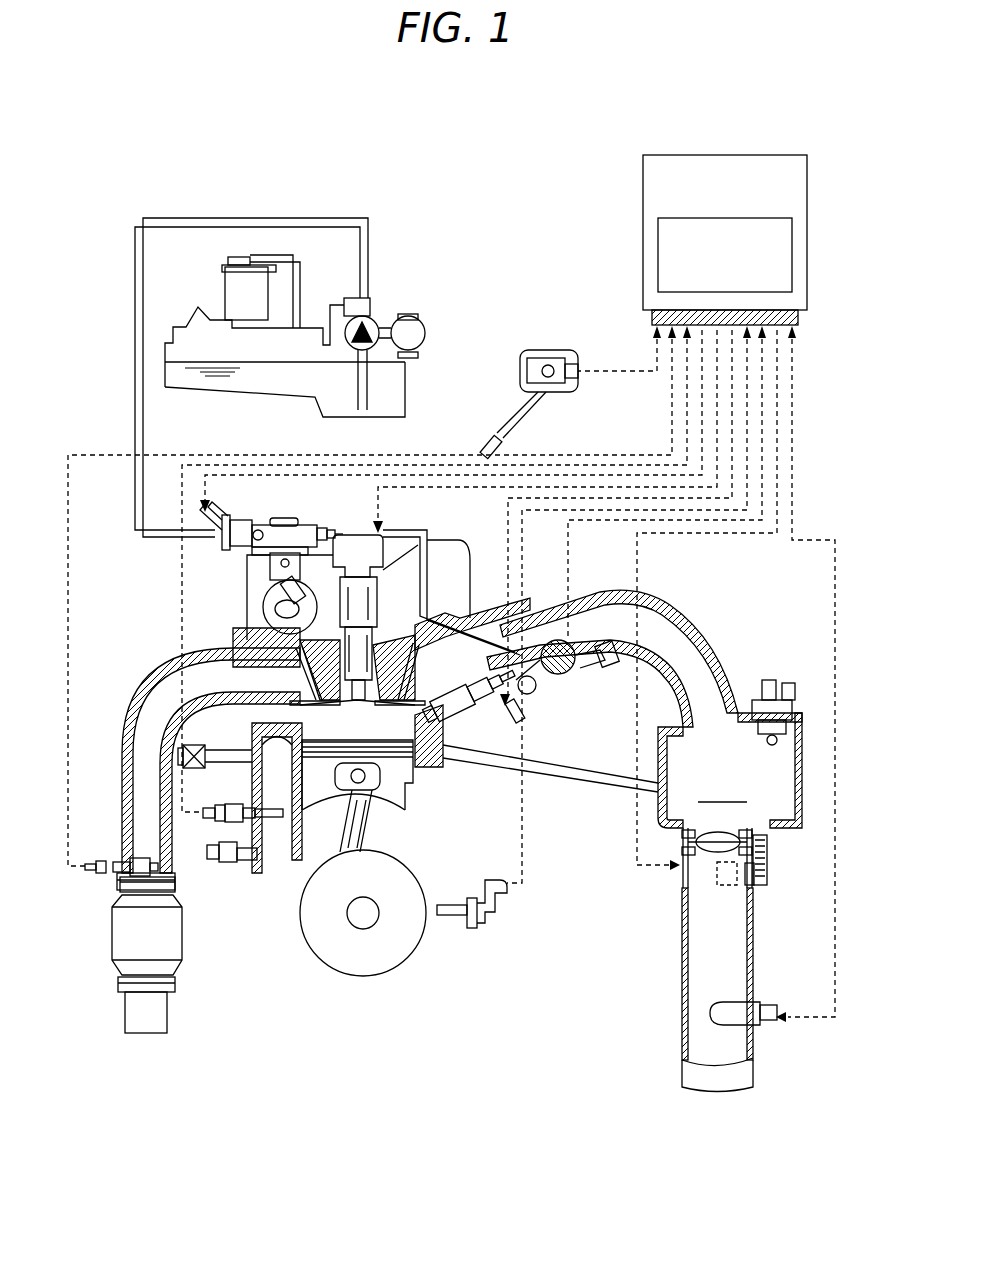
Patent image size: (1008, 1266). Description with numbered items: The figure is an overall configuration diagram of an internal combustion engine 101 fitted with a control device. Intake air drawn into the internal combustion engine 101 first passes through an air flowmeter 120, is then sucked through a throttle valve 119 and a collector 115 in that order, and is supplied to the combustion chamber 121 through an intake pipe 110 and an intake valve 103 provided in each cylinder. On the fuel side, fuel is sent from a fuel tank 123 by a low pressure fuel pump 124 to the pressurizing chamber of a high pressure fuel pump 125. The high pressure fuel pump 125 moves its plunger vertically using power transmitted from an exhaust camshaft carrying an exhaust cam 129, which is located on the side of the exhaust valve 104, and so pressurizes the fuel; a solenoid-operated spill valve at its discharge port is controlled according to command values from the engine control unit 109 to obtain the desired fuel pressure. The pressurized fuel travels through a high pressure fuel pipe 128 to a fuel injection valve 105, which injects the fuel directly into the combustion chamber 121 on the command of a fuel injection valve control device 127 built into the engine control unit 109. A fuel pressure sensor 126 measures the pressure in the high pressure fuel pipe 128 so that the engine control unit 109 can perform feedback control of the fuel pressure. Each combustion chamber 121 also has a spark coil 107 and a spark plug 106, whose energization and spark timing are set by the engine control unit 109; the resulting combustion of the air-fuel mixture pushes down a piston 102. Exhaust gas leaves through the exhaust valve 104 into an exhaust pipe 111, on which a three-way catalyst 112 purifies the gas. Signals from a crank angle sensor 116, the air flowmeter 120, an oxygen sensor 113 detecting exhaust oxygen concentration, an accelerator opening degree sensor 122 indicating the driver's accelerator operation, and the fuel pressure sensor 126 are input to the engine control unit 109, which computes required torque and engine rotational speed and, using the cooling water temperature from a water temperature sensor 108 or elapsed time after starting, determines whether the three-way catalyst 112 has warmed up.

The internal combustion engine 101 is at (387, 728).
The piston 102 is at (398, 812).
The intake valve 103 is at (423, 637).
The exhaust valve 104 is at (327, 702).
The fuel injection valve 105 is at (463, 720).
The spark plug 106 is at (345, 702).
The spark coil 107 is at (350, 545).
The water temperature sensor 108 is at (277, 822).
The engine control unit 109 is at (770, 154).
The intake pipe 110 is at (530, 637).
The exhaust pipe 111 is at (137, 707).
The three-way catalyst 112 is at (173, 945).
The oxygen sensor 113 is at (105, 877).
The collector 115 is at (730, 754).
The crank angle sensor 116 is at (483, 917).
The throttle valve 119 is at (770, 878).
The air flowmeter 120 is at (775, 1022).
The combustion chamber 121 is at (420, 755).
The accelerator opening degree sensor 122 is at (545, 350).
The fuel tank 123 is at (295, 388).
The low pressure fuel pump 124 is at (385, 323).
The high pressure fuel pump 125 is at (285, 520).
The fuel pressure sensor 126 is at (568, 675).
The fuel injection valve control device 127 is at (793, 255).
The high pressure fuel pipe 128 is at (400, 533).
The exhaust cam 129 is at (258, 607).